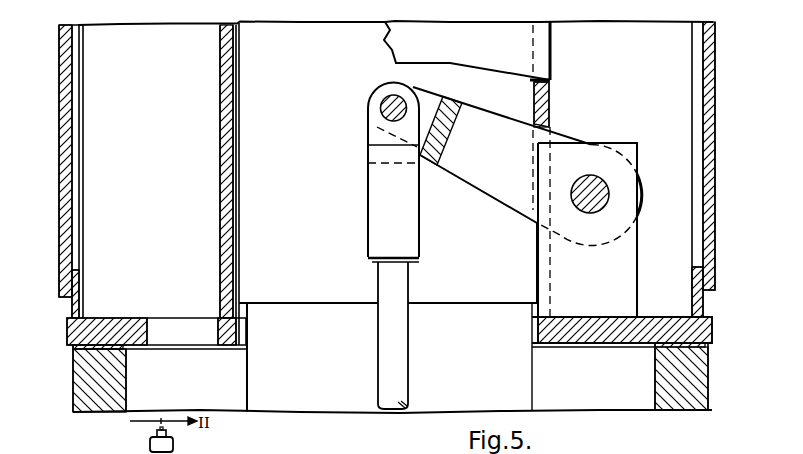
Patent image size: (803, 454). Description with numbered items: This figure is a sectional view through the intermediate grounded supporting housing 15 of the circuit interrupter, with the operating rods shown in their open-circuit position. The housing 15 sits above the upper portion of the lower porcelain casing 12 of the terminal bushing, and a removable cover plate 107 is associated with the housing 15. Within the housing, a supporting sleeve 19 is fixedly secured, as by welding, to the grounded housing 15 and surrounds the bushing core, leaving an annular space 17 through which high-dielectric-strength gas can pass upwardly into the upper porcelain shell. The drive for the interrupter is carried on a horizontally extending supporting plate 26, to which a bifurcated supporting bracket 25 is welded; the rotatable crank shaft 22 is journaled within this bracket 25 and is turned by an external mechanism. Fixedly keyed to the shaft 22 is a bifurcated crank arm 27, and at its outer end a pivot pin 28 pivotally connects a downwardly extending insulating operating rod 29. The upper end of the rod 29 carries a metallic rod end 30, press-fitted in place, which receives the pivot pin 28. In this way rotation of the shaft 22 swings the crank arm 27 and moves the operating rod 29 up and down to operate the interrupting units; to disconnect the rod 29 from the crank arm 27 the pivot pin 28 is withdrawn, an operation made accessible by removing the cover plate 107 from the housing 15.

The lower porcelain casing 12 is at (698, 384).
The grounded supporting housing 15 is at (60, 75).
The annular space 17 is at (239, 133).
The supporting sleeve 19 is at (552, 48).
The rotatable shaft 22 is at (592, 203).
The bifurcated supporting bracket 25 is at (640, 250).
The supporting plate 26 is at (665, 327).
The bifurcated crank arm 27 is at (475, 177).
The pivot pin 28 is at (383, 104).
The operating rod 29 is at (397, 368).
The metallic rod end 30 is at (377, 221).
The cover plate 107 is at (60, 180).